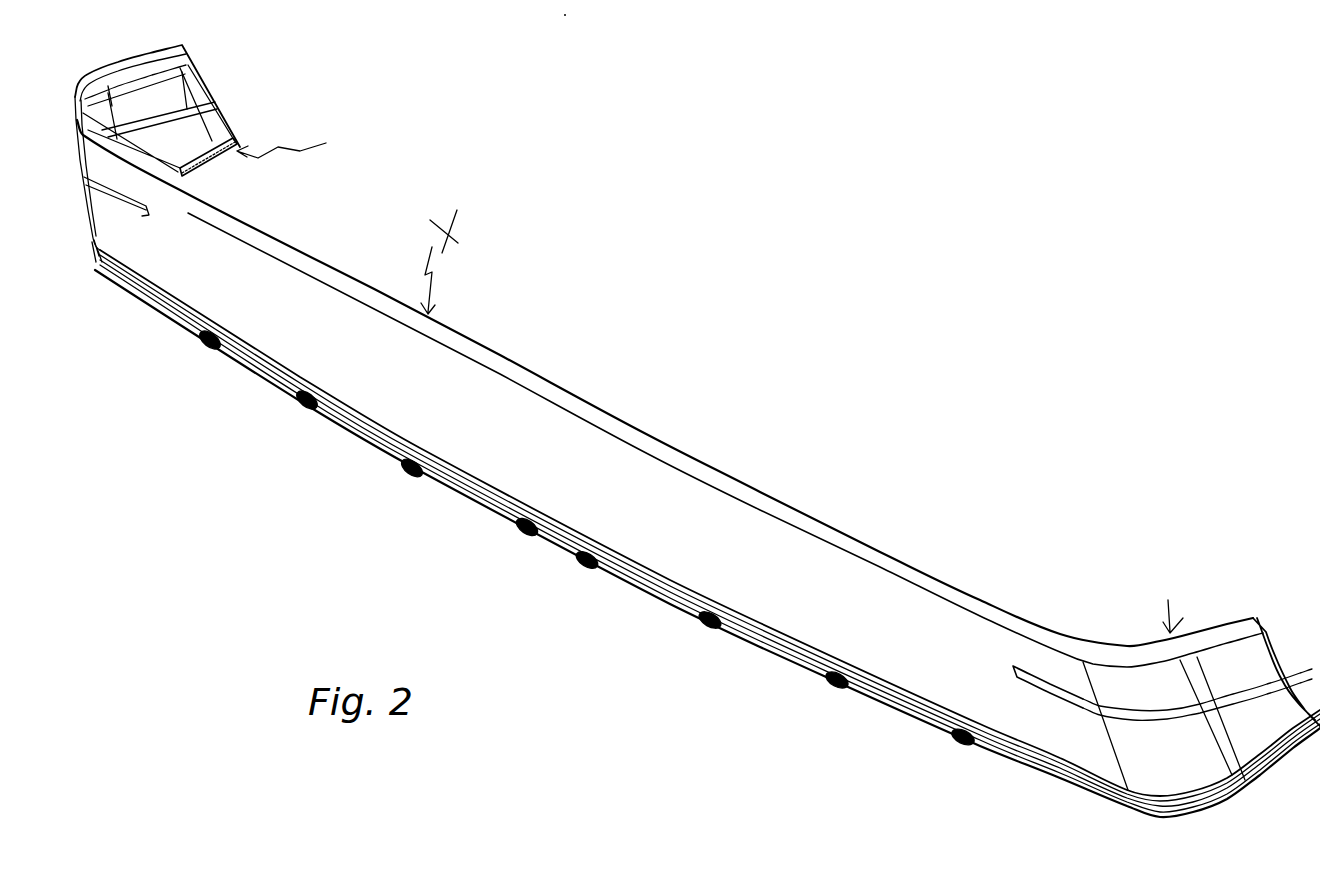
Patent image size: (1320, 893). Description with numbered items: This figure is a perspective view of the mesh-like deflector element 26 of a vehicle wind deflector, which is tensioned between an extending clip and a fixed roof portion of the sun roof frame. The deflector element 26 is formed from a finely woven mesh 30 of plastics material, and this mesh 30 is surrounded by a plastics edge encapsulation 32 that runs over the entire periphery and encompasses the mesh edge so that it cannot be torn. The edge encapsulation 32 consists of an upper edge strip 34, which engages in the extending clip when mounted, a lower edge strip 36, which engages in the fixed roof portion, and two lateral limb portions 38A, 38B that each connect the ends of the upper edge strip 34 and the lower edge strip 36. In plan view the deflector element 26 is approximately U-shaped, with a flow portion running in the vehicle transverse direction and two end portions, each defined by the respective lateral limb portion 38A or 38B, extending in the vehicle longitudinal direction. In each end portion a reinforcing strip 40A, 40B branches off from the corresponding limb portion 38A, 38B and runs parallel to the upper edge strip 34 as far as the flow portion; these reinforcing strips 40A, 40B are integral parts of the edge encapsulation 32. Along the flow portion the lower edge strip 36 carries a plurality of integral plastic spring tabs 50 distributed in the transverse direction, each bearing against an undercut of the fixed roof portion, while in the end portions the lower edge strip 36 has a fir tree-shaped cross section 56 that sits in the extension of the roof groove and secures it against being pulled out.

The deflector element 26 is at (853, 461).
The mesh 30 is at (552, 461).
The edge encapsulation 32 is at (498, 363).
The upper edge strip 34 is at (637, 441).
The lower edge strip 36 is at (472, 496).
The lateral limb portion 38A is at (212, 113).
The lateral limb portion 38B is at (1266, 640).
The reinforcing strip 40A is at (184, 180).
The reinforcing strip 40B is at (1026, 670).
The plastic spring tabs 50 is at (598, 572).
The fir tree-shaped cross section 56 is at (195, 163).